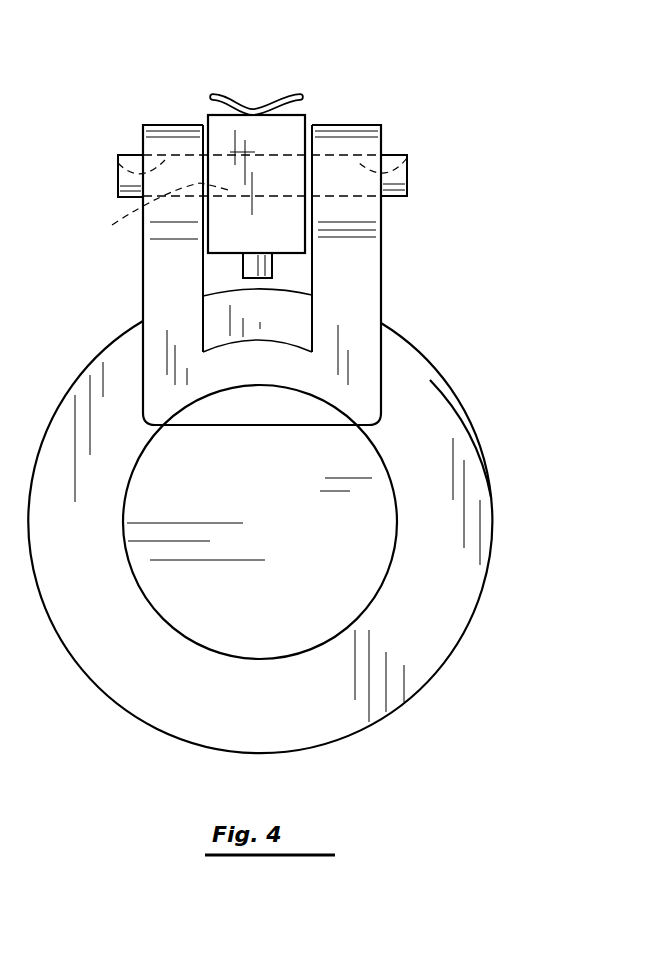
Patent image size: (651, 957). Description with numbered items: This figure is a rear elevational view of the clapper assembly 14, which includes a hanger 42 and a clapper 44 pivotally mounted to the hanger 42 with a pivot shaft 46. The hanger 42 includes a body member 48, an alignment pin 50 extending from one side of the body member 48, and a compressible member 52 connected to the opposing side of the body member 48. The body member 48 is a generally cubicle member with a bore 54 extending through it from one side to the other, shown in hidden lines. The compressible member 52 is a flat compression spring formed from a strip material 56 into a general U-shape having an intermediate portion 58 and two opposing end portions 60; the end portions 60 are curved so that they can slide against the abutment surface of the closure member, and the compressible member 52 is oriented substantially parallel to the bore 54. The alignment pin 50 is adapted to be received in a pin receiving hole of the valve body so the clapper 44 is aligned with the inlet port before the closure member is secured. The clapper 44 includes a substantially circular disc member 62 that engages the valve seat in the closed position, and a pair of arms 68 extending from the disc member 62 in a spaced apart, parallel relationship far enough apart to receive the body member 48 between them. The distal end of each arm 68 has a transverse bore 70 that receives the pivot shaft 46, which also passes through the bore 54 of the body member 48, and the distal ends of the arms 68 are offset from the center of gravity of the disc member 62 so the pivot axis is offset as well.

The clapper assembly 14 is at (295, 231).
The hanger 42 is at (244, 186).
The clapper 44 is at (45, 438).
The pivot shaft 46 is at (395, 197).
The body member 48 is at (206, 228).
The alignment pin 50 is at (273, 268).
The compressible member 52 is at (233, 96).
The bore 54 is at (157, 214).
The strip material 56 is at (219, 95).
The intermediate portion 58 is at (254, 109).
The end portions 60 is at (214, 95).
The disc member 62 is at (493, 497).
The arms 68 is at (142, 318).
The bore 70 is at (118, 165).